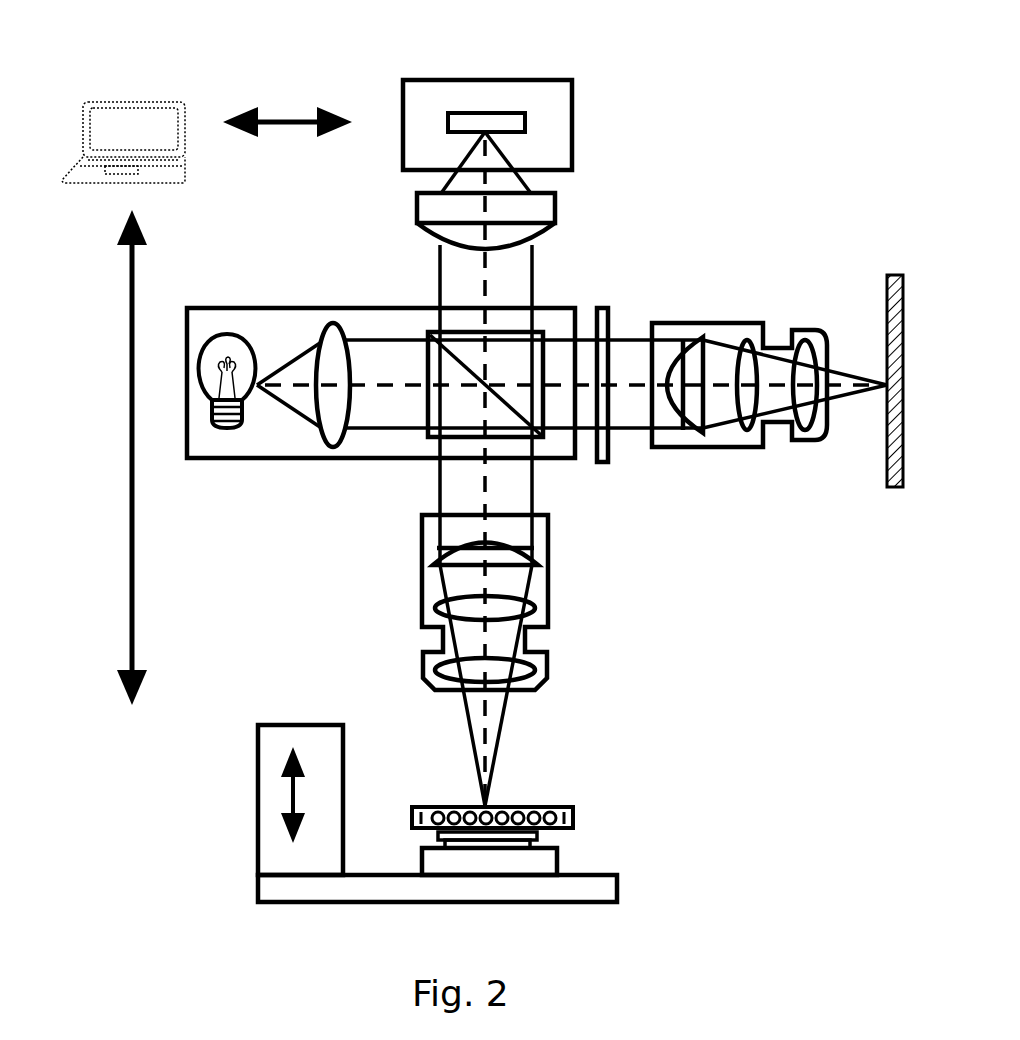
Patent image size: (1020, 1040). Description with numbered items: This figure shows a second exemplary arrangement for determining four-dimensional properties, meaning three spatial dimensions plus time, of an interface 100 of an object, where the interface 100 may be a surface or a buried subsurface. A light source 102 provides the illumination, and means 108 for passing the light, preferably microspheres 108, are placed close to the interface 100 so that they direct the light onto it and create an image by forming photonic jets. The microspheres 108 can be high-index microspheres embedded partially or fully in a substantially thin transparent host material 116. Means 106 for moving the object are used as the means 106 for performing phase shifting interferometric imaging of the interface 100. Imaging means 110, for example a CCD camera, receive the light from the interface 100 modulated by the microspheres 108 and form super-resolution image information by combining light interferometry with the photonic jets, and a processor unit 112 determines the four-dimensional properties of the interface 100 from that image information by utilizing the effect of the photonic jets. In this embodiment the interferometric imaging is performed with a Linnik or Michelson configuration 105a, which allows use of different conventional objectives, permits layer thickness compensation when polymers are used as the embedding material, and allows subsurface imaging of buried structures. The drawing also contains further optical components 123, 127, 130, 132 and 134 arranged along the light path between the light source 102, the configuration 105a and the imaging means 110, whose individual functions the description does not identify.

The interface 100 is at (560, 835).
The light source 102 is at (222, 432).
The Linnik or Michelson configuration 105a is at (385, 632).
The means for moving the object 106 is at (257, 827).
The microspheres 108 is at (573, 808).
The imaging means 110 is at (572, 80).
The processor unit 112 is at (112, 102).
The transparent host material 116 is at (574, 812).
The mirror 123 is at (885, 330).
The filter plate 127 is at (608, 310).
The tube lens 130 is at (560, 197).
The collimating lens 132 is at (316, 332).
The beam splitter 134 is at (428, 440).